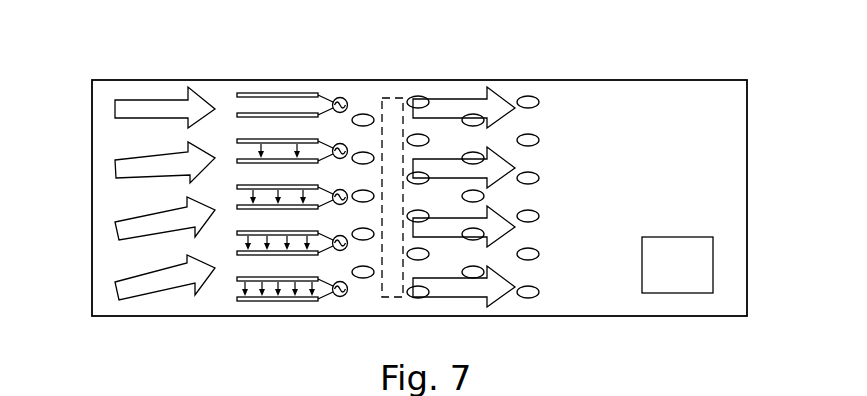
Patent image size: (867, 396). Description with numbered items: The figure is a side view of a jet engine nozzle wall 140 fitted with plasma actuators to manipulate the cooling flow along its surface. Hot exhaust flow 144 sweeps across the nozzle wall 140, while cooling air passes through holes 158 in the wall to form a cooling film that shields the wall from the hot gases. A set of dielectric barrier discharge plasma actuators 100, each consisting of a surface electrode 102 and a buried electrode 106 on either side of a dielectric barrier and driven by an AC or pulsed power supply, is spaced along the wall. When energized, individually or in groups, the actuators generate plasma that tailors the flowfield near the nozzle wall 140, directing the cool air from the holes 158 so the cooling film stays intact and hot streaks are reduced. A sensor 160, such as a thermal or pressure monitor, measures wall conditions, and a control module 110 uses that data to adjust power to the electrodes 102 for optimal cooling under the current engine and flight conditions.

The dielectric barrier discharge plasma actuator 100 is at (319, 53).
The surface electrode 102 is at (282, 92).
The buried electrode 106 is at (270, 303).
The control module 110 is at (401, 97).
The nozzle wall 140 is at (700, 92).
The hot exhaust flow 144 is at (142, 98).
The holes 158 is at (530, 95).
The sensor 160 is at (670, 293).